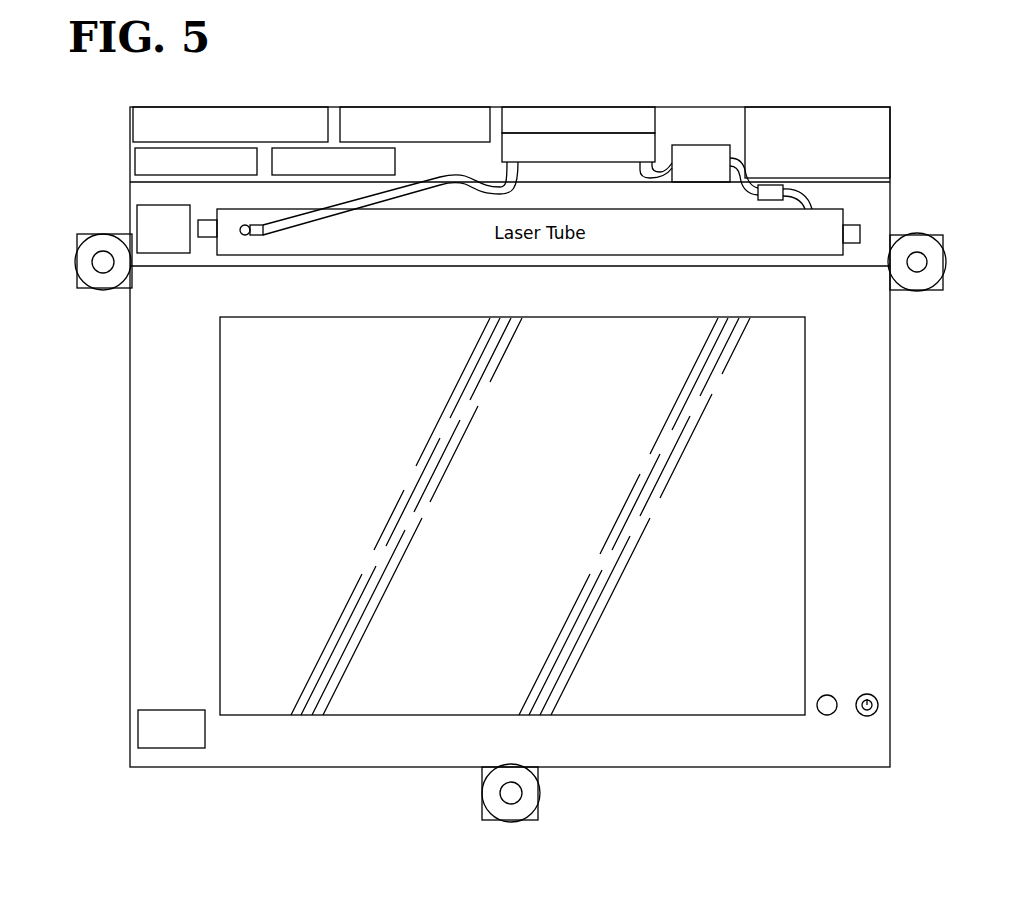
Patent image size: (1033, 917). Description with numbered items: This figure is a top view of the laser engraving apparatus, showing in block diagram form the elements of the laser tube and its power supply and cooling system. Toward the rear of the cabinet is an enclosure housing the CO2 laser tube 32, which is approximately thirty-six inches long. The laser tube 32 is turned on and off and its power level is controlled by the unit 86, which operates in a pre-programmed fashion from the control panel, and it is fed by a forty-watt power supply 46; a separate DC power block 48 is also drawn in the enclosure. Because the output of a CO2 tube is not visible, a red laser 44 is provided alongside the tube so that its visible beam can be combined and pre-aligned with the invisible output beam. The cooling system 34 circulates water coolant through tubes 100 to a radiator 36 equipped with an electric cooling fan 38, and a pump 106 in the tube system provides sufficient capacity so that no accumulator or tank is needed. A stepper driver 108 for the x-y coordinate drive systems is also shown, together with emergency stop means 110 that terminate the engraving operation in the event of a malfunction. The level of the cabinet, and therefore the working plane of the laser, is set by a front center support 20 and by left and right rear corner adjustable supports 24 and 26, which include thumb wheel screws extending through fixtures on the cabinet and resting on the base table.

The front center support 20 is at (492, 798).
The left rear corner adjustable support 24 is at (70, 260).
The right rear corner adjustable support 26 is at (913, 233).
The CO2 laser tube 32 is at (658, 230).
The cooling system 34 is at (587, 85).
The radiator 36 is at (660, 142).
The electric cooling fan 38 is at (633, 107).
The red laser 44 is at (167, 242).
The 40-watt power supply 46 is at (838, 107).
The 36v DC power supply 48 is at (428, 107).
The control unit 86 is at (262, 107).
The coolant tubes 100 is at (348, 213).
The pump 106 is at (712, 145).
The stepper driver 108 is at (133, 163).
The emergency stop means 110 is at (815, 705).